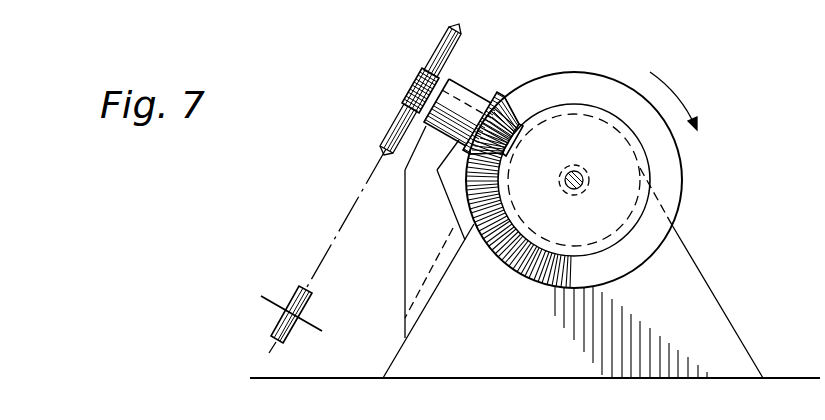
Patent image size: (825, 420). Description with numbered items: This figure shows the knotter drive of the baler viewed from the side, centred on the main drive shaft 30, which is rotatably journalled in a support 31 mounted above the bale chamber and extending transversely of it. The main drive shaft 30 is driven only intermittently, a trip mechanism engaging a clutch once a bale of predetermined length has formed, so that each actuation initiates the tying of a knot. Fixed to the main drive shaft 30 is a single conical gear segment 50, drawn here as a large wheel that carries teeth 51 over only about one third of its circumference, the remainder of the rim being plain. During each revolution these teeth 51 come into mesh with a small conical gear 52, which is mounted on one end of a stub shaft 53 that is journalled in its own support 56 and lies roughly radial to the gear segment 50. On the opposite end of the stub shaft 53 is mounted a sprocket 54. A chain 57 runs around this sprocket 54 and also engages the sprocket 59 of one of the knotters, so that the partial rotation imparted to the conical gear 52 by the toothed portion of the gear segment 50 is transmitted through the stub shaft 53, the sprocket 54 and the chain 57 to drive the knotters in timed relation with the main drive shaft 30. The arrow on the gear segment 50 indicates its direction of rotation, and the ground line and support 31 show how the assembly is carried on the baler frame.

The main drive shaft 30 is at (568, 194).
The support 31 is at (726, 311).
The conical gear segment 50 is at (630, 274).
The teeth 51 is at (522, 278).
The conical gear 52 is at (507, 100).
The stub shaft 53 is at (412, 83).
The sprocket 54 is at (456, 50).
The support 56 is at (477, 66).
The chain 57 is at (363, 189).
The sprocket 59 is at (300, 291).